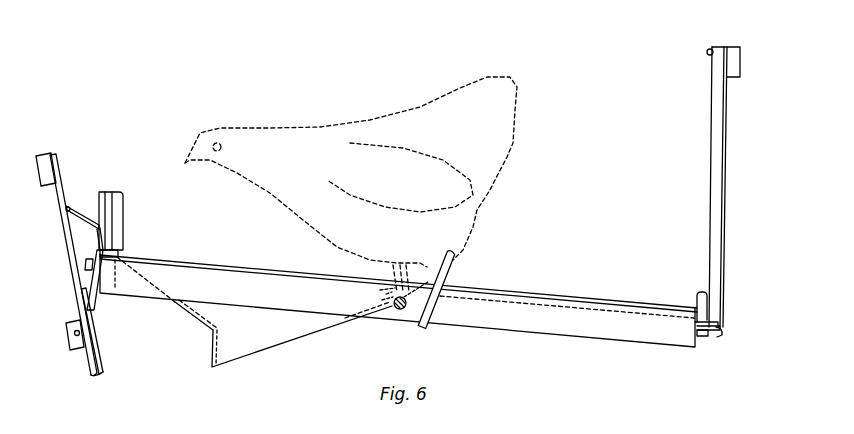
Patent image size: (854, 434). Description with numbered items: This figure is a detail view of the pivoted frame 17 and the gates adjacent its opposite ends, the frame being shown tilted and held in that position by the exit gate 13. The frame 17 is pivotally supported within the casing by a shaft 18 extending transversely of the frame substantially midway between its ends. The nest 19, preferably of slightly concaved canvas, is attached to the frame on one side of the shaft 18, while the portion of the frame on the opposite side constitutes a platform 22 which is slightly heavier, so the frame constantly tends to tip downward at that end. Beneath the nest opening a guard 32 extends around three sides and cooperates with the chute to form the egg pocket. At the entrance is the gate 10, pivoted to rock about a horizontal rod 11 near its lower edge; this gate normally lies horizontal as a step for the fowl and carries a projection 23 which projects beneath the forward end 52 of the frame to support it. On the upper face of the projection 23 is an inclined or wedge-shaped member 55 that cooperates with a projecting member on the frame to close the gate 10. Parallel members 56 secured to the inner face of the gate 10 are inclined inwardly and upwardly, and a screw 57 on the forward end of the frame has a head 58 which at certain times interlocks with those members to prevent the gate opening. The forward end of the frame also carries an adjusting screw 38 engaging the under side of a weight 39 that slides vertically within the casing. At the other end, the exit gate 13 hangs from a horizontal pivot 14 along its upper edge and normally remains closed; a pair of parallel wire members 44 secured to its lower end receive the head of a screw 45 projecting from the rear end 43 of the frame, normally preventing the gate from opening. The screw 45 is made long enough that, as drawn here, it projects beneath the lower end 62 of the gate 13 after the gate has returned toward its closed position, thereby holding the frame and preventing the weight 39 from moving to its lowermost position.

The gate 10 is at (67, 236).
The rod 11 is at (76, 337).
The gate 13 is at (718, 166).
The pivot 14 is at (707, 51).
The frame 17 is at (240, 282).
The shaft 18 is at (400, 310).
The nest 19 is at (212, 326).
The platform 22 is at (582, 297).
The projection 23 is at (90, 368).
The guard 32 is at (212, 357).
The adjusting screw 38 is at (148, 257).
The weight 39 is at (116, 209).
The rear end 43 is at (698, 321).
The parallel members 44 is at (696, 295).
The screw 45 is at (702, 337).
The forward end 52 is at (98, 278).
The inclined member 55 is at (101, 361).
The parallel members 56 is at (88, 215).
The screw 57 is at (106, 251).
The head 58 is at (87, 266).
The lower end 62 is at (721, 331).